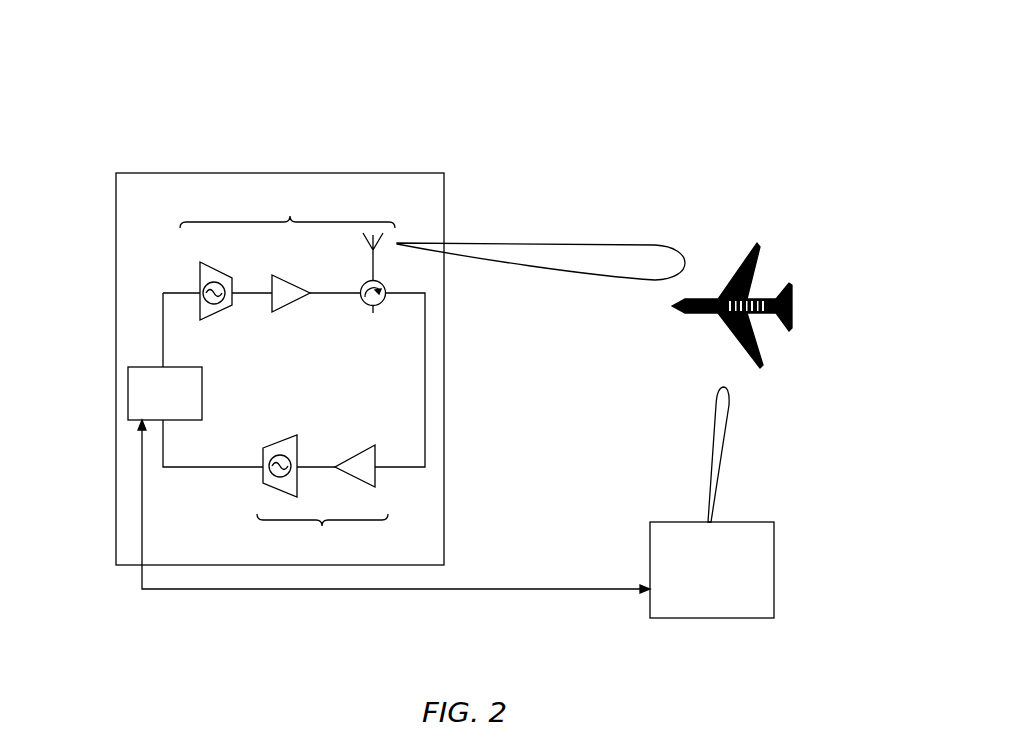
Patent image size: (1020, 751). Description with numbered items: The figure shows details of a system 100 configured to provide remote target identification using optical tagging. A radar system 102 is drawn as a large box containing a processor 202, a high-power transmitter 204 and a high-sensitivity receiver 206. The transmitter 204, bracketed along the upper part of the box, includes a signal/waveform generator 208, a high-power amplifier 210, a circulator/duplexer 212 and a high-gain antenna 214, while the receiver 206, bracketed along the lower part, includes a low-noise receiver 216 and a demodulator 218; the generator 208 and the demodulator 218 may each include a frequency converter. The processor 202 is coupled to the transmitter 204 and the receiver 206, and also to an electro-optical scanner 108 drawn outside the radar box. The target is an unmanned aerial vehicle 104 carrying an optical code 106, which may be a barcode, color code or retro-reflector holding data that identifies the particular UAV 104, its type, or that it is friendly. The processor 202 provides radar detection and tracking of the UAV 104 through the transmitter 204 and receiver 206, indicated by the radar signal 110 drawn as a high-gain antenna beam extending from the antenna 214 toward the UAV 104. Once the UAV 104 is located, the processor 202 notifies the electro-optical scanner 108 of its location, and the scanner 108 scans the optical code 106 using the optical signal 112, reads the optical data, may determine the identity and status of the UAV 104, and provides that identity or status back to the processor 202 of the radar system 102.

The system 100 is at (790, 95).
The radar system 102 is at (116, 222).
The unmanned aerial vehicle 104 is at (680, 308).
The optical code 106 is at (768, 300).
The electro-optical scanner 108 is at (774, 560).
The radar signal 110 is at (578, 230).
The optical signal 112 is at (741, 438).
The processor 202 is at (202, 388).
The high-power transmitter 204 is at (288, 209).
The high-sensitivity receiver 206 is at (321, 532).
The signal/waveform generator 208 is at (212, 320).
The high-power amplifier 210 is at (272, 275).
The circulator/duplexer 212 is at (368, 306).
The high-gain antenna 214 is at (366, 278).
The low-noise receiver 216 is at (378, 475).
The demodulator 218 is at (298, 440).